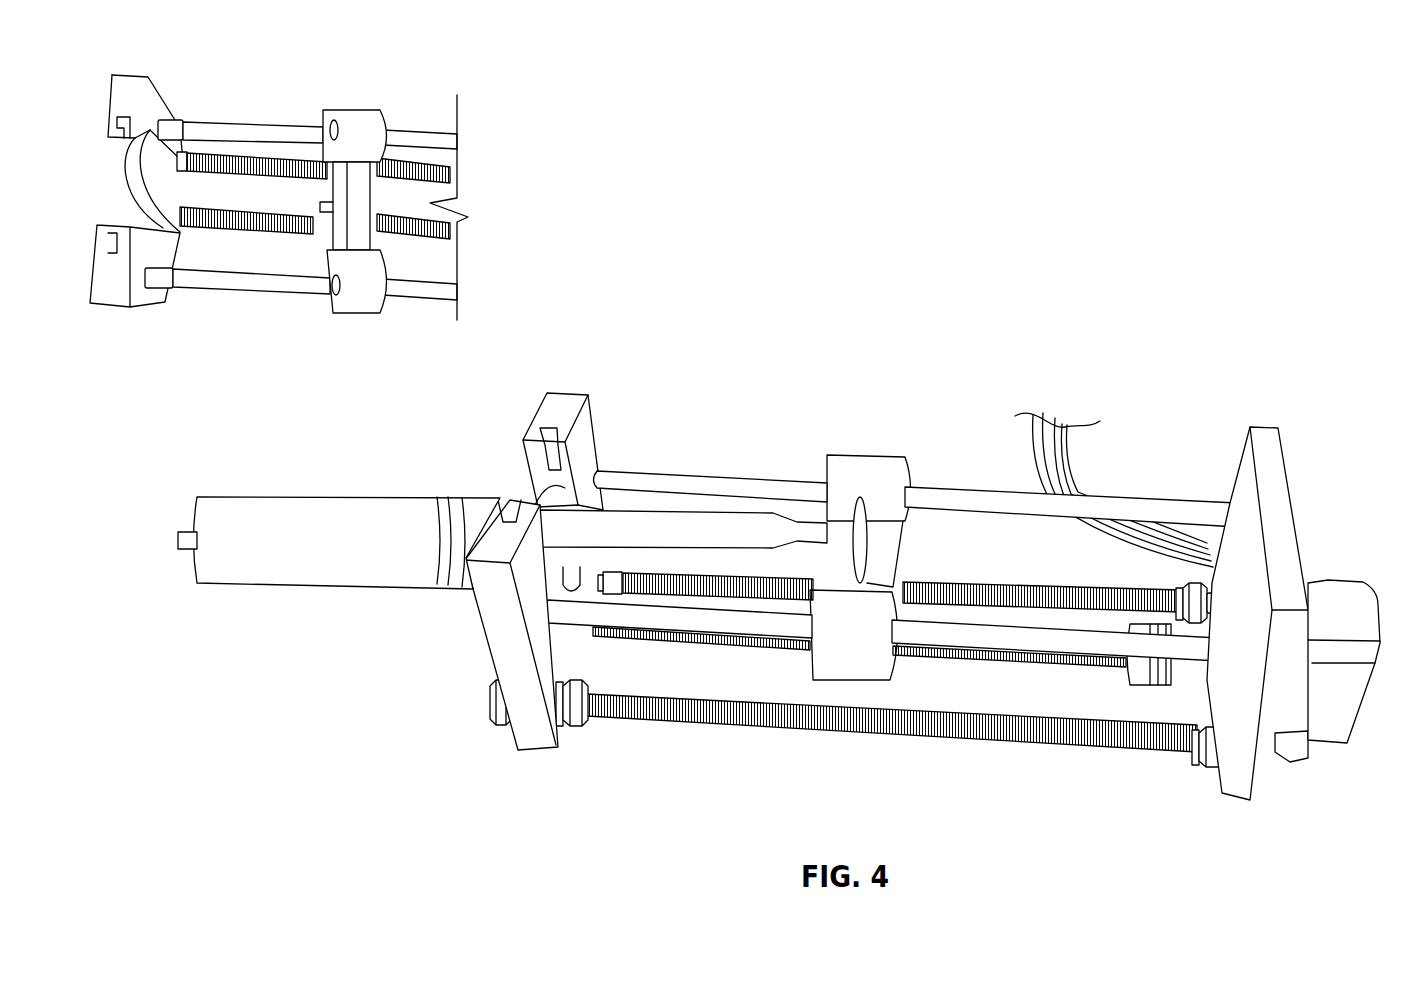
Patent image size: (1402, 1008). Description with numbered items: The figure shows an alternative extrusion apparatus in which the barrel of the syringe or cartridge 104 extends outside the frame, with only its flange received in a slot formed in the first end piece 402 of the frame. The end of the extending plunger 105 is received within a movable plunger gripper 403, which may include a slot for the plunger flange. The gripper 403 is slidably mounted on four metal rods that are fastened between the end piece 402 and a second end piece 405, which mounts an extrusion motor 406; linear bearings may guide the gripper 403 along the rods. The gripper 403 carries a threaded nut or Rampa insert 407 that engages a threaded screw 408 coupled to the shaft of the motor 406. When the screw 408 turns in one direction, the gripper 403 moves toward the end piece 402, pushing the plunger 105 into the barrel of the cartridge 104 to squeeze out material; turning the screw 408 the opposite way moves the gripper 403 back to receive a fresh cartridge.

The syringe or cartridge 104 is at (315, 542).
The extending plunger 105 is at (657, 525).
The end piece 402 is at (112, 285).
The movable plunger gripper 403 is at (353, 130).
The second end piece 405 is at (1263, 432).
The extrusion motor 406 is at (1310, 687).
The threaded nut or Rampa insert 407 is at (1145, 670).
The threaded screw 408 is at (653, 638).